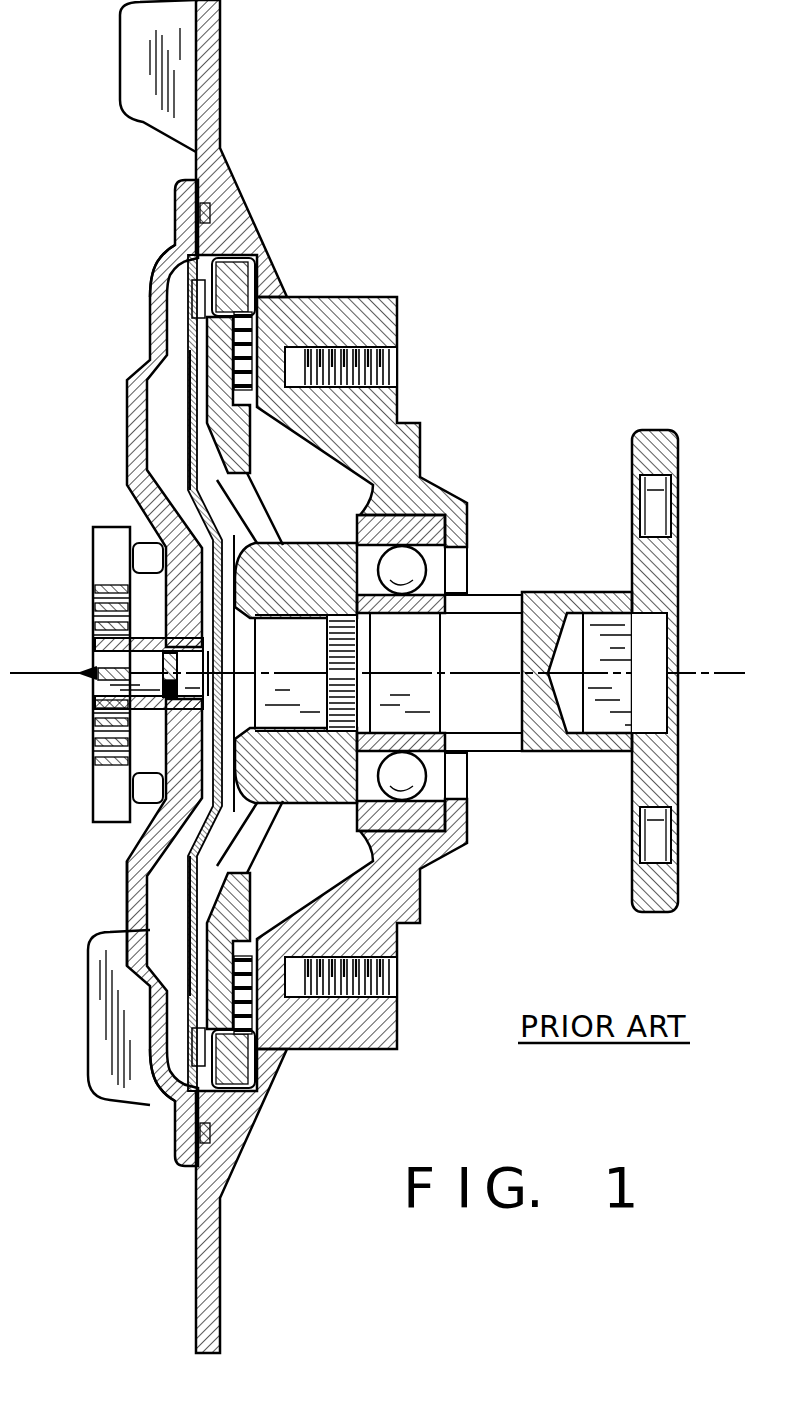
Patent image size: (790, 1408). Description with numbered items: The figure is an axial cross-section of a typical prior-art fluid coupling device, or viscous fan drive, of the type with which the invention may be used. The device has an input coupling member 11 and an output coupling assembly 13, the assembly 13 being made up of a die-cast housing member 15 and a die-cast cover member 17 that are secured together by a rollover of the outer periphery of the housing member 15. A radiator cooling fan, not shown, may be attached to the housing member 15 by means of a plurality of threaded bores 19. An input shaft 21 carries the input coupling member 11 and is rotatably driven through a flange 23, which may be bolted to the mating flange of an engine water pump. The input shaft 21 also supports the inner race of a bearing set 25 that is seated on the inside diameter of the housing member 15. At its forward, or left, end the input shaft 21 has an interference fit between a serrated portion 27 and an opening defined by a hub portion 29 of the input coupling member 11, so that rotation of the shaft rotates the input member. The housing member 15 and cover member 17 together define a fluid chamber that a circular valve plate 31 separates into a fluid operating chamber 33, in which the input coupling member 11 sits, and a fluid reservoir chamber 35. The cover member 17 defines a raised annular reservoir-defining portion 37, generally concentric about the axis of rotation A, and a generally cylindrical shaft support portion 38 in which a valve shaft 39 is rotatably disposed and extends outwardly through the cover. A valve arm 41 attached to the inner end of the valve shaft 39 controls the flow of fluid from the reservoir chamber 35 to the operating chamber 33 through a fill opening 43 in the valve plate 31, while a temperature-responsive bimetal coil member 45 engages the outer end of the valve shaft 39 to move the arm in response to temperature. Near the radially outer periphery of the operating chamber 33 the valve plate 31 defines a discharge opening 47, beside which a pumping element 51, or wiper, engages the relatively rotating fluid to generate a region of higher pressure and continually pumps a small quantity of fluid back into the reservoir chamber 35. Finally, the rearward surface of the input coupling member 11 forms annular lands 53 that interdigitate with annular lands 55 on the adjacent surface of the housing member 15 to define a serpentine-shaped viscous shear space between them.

The input coupling member 11 is at (285, 523).
The output coupling assembly 13 is at (262, 196).
The housing member 15 is at (383, 327).
The cover member 17 is at (127, 372).
The threaded bores 19 is at (390, 383).
The input shaft 21 is at (550, 607).
The flange 23 is at (640, 893).
The bearing set 25 is at (443, 775).
The serrated portion 27 is at (355, 630).
The hub portion 29 is at (310, 743).
The valve plate 31 is at (212, 523).
The fluid operating chamber 33 is at (320, 854).
The fluid reservoir chamber 35 is at (163, 892).
The reservoir-defining portion 37 is at (137, 920).
The shaft support portion 38 is at (188, 637).
The valve shaft 39 is at (92, 683).
The valve arm 41 is at (187, 447).
The fill opening 43 is at (185, 388).
The coil member 45 is at (90, 615).
The discharge opening 47 is at (152, 268).
The pumping element 51 is at (262, 268).
The annular lands 53 is at (263, 945).
The annular lands 55 is at (225, 1030).
The axis of rotation A is at (734, 672).